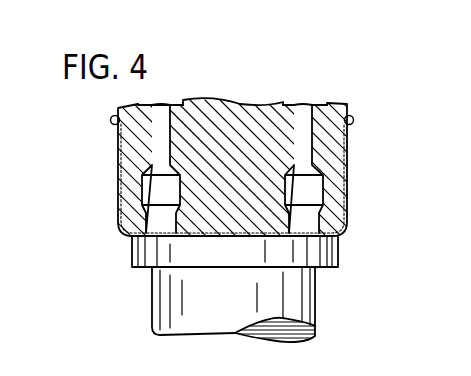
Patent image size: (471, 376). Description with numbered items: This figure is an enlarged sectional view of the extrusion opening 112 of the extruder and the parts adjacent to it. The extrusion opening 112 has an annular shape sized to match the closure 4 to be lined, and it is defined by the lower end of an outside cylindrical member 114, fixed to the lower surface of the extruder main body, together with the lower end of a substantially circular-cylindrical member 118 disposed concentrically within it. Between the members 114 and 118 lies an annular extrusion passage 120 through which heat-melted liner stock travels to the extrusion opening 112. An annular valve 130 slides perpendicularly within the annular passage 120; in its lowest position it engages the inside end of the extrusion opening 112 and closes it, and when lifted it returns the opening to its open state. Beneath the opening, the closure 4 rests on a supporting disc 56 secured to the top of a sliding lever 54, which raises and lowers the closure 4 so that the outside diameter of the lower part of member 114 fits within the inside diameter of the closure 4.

The closure 4 is at (323, 149).
The sliding lever 54 is at (305, 307).
The supporting disc 56 is at (132, 258).
The extrusion opening 112 is at (337, 258).
The outside cylindrical member 114 is at (120, 152).
The substantially circular-cylindrical member 118 is at (282, 104).
The annular extrusion passage 120 is at (327, 165).
The annular valve 130 is at (152, 188).